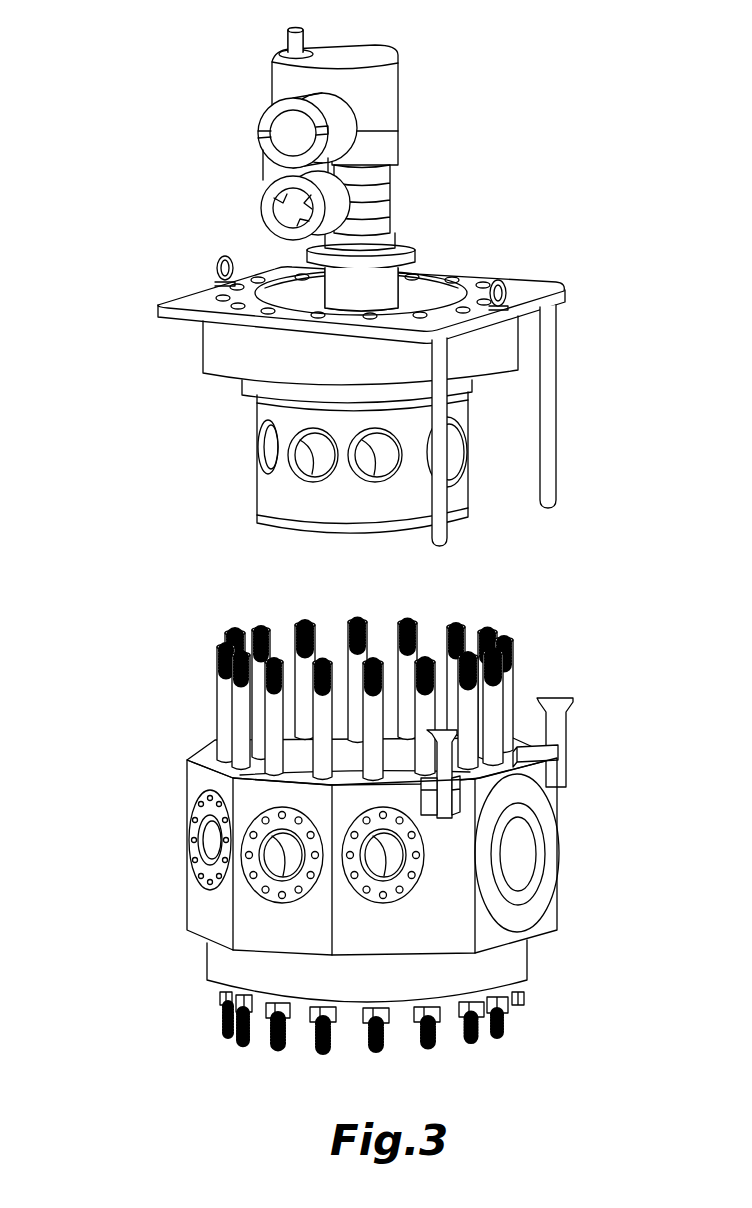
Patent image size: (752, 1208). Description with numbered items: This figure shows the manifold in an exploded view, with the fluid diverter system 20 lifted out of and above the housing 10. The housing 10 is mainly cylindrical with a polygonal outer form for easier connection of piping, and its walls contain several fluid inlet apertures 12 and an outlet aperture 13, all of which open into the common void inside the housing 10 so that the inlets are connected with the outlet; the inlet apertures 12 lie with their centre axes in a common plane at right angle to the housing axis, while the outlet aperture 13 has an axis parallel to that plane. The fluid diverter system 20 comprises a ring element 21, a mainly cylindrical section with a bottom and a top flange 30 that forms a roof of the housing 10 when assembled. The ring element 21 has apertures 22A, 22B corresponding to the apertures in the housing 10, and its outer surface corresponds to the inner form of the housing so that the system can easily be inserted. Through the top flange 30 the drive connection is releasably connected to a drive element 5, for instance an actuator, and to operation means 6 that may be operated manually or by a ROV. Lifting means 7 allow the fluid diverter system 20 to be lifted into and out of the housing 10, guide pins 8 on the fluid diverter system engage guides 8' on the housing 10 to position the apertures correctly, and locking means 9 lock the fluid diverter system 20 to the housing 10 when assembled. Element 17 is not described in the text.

The drive element 5 is at (262, 117).
The operation means 6 is at (288, 42).
The lifting means 7 is at (216, 261).
The guide pin 8 is at (523, 425).
The guide 8' is at (510, 783).
The locking means 9 is at (222, 700).
The housing 10 is at (457, 920).
The fluid inlet aperture 12 is at (268, 855).
The outlet aperture 13 is at (518, 862).
The flange connection 17 is at (352, 893).
The fluid diverter system 20 is at (134, 384).
The ring element 21 is at (295, 511).
The aperture 22A is at (262, 447).
The aperture 22B is at (455, 472).
The top flange 30 is at (238, 324).